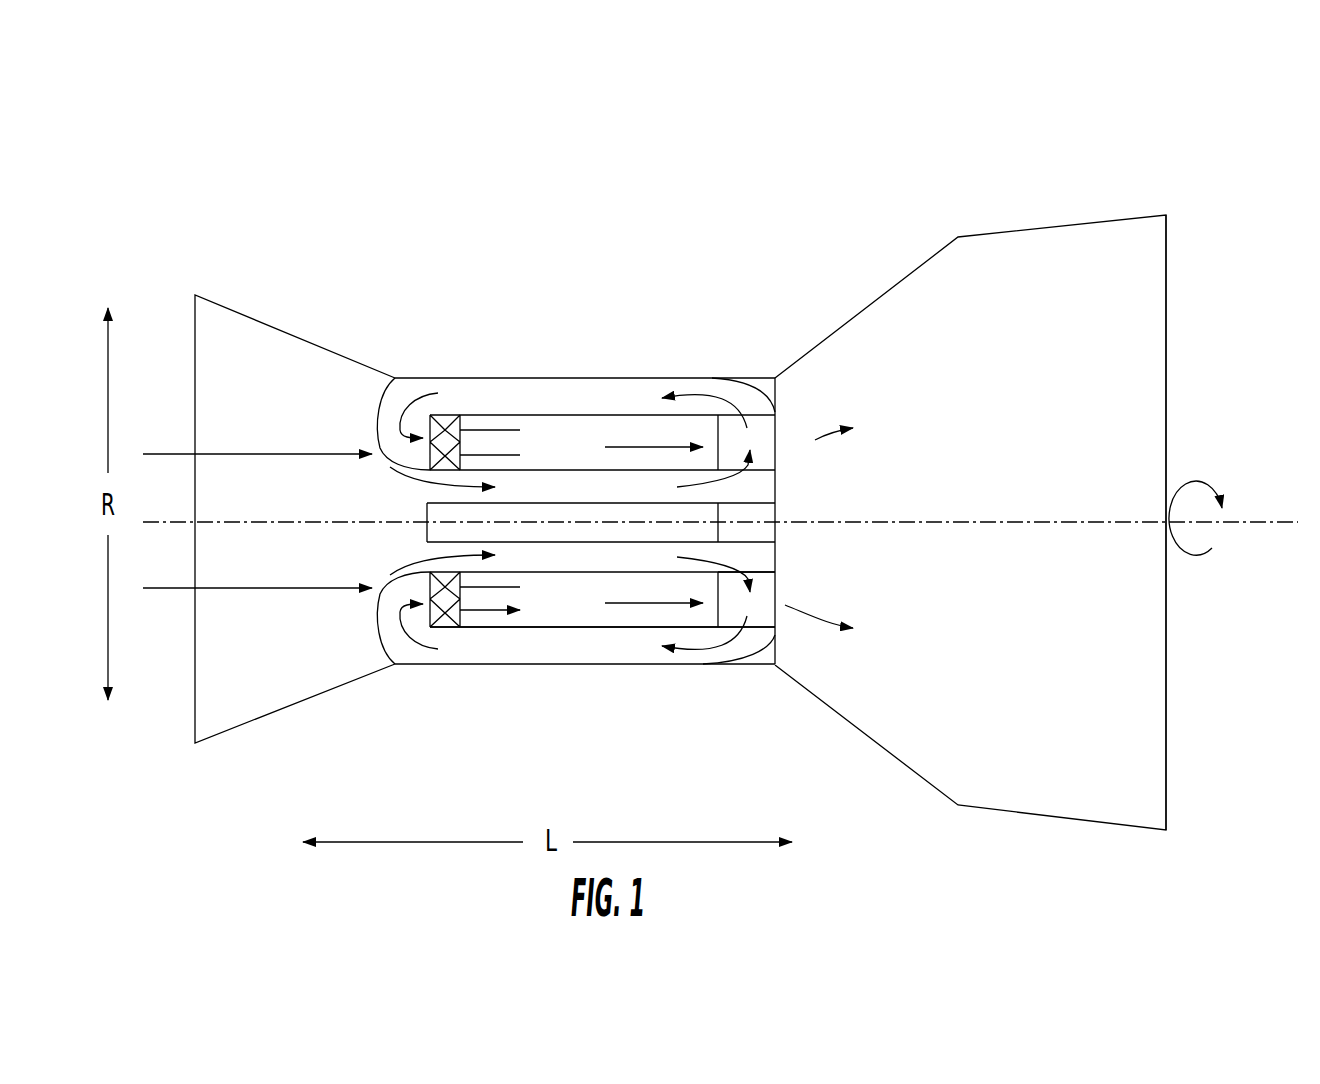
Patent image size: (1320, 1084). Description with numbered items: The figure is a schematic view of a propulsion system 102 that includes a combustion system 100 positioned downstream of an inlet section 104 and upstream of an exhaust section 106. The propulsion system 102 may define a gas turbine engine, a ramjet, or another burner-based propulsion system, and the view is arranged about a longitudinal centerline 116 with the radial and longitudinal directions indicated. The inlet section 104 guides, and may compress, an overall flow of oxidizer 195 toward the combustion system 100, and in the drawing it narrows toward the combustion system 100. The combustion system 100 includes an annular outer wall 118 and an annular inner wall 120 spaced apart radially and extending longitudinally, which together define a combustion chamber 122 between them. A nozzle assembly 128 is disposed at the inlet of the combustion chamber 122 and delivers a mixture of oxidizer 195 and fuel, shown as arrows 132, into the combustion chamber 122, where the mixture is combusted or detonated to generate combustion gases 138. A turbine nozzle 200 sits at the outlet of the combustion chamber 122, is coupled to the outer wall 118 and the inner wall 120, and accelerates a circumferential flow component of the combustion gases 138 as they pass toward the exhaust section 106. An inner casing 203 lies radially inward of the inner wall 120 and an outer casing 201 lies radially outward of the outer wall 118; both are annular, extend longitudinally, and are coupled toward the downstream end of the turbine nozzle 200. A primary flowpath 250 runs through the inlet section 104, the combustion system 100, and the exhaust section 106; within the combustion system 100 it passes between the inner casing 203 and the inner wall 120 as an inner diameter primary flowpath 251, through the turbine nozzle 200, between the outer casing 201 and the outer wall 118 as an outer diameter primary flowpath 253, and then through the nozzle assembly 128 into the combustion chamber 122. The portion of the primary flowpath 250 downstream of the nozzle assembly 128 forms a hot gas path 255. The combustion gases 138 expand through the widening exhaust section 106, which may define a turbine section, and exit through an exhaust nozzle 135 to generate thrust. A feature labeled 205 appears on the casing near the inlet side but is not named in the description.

The combustion system 100 is at (578, 312).
The propulsion system 102 is at (742, 138).
The inlet section 104 is at (275, 285).
The exhaust section 106 is at (920, 242).
The longitudinal centerline 116 is at (1235, 521).
The annular outer wall 118 is at (627, 628).
The annular inner wall 120 is at (765, 570).
The combustion chamber 122 is at (542, 614).
The nozzle assembly 128 is at (450, 412).
The fuel/oxidizer mixture 132 is at (482, 428).
The exhaust nozzle 135 is at (1165, 197).
The combustion gases 138 is at (605, 447).
The oxidizer 195 is at (447, 413).
The turbine nozzle 200 is at (767, 433).
The outer casing 201 is at (690, 378).
The inner casing 203 is at (512, 538).
The outer casing 205 is at (378, 636).
The primary flowpath 250 is at (322, 442).
The inner diameter primary flowpath 251 is at (587, 504).
The outer diameter primary flowpath 253 is at (590, 398).
The hot gas path 255 is at (985, 422).